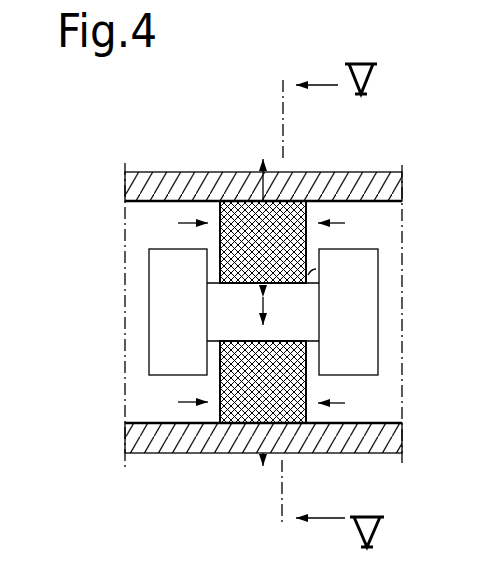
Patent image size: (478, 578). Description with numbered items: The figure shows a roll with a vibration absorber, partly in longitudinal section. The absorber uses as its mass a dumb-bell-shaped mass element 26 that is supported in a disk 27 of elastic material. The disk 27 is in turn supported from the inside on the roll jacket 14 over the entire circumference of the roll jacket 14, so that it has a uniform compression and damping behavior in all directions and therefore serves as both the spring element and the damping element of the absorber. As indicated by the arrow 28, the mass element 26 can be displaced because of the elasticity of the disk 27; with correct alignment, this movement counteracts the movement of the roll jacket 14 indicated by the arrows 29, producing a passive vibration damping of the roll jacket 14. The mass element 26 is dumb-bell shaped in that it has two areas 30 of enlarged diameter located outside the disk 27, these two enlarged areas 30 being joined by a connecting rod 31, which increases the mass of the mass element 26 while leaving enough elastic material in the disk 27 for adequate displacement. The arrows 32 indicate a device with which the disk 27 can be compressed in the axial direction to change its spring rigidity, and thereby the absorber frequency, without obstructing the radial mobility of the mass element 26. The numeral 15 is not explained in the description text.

The roll jacket 14 is at (333, 190).
The gap 15 is at (165, 218).
The mass element 26 is at (316, 269).
The disk 27 is at (253, 198).
The arrow 28 is at (263, 313).
The arrows 29 is at (275, 192).
The areas with enlarged diameter 30 is at (163, 353).
The connecting rod 31 is at (220, 298).
The arrows 32 is at (188, 220).